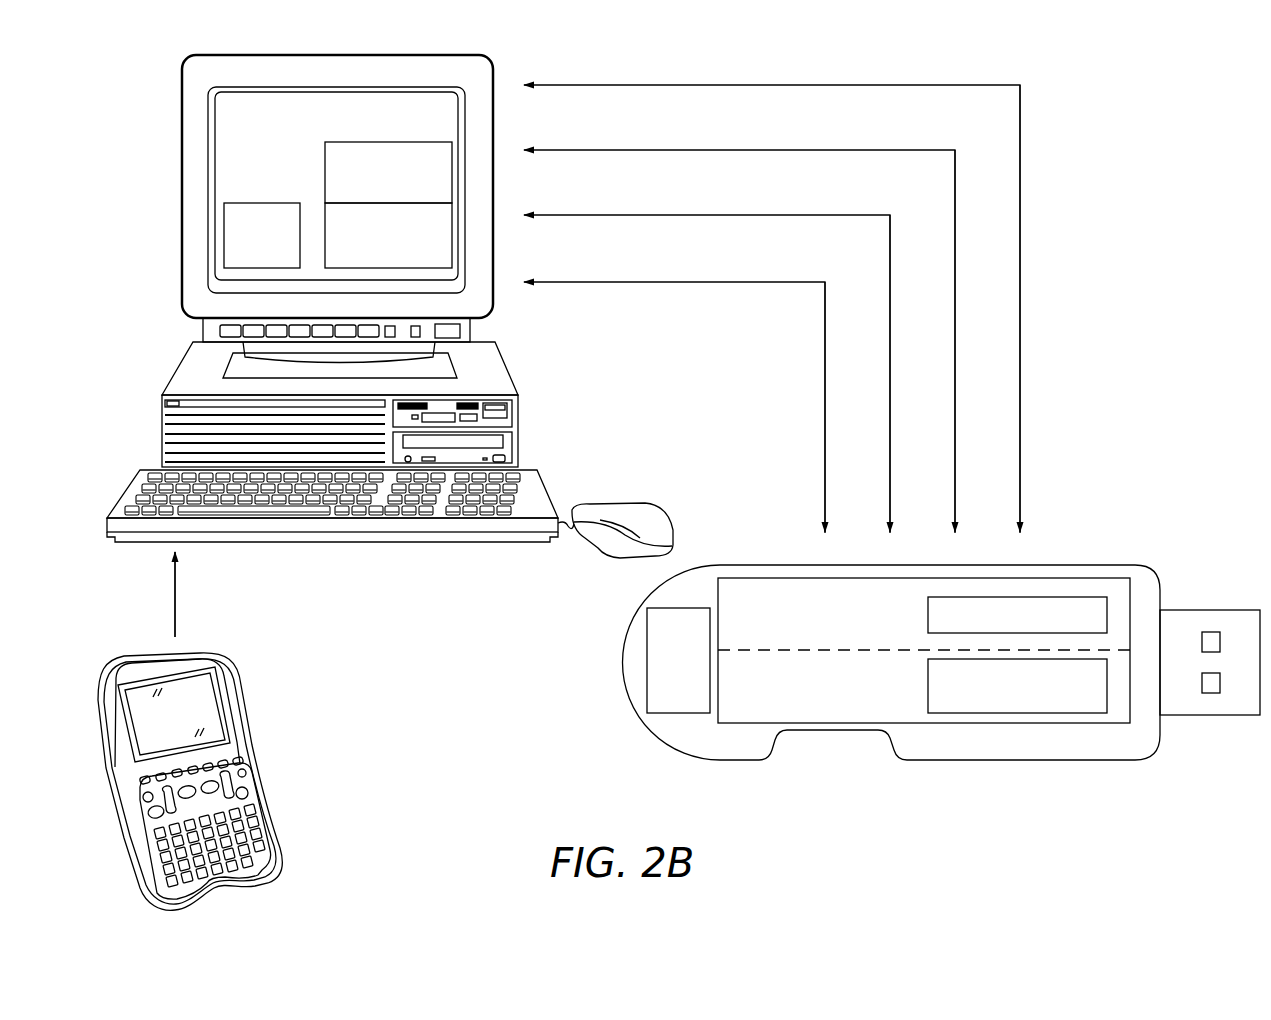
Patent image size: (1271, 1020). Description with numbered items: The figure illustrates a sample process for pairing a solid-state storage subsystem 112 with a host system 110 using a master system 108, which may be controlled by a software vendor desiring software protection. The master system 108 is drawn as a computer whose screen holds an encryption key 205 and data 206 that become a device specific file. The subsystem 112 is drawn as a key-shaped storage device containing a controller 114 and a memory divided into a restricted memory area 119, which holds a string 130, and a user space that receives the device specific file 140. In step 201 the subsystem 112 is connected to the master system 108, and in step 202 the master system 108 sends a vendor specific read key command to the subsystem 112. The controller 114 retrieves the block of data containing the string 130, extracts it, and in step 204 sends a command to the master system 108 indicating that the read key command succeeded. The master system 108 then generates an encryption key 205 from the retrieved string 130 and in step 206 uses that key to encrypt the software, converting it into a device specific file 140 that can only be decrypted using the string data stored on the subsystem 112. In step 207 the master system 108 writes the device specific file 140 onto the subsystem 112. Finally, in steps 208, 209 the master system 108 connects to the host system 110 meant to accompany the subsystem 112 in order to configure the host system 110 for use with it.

The master system 108 is at (130, 120).
The host system 110 is at (318, 770).
The solid-state storage subsystem 112 is at (1125, 528).
The controller 114 is at (656, 606).
The restricted memory area 119 is at (785, 577).
The string 130 is at (927, 602).
The device specific file 140 is at (927, 678).
The step of connecting subsystem to master system 201 is at (791, 312).
The step of sending read key command 202 is at (734, 330).
The step of sending success command 204 is at (727, 377).
The step of generating encryption key 205 is at (310, 158).
The step of encrypting software 206 is at (310, 208).
The step of writing device specific file 207 is at (669, 396).
The step of connecting to host system 208 is at (213, 593).
The data transfer to master system 209 is at (213, 593).